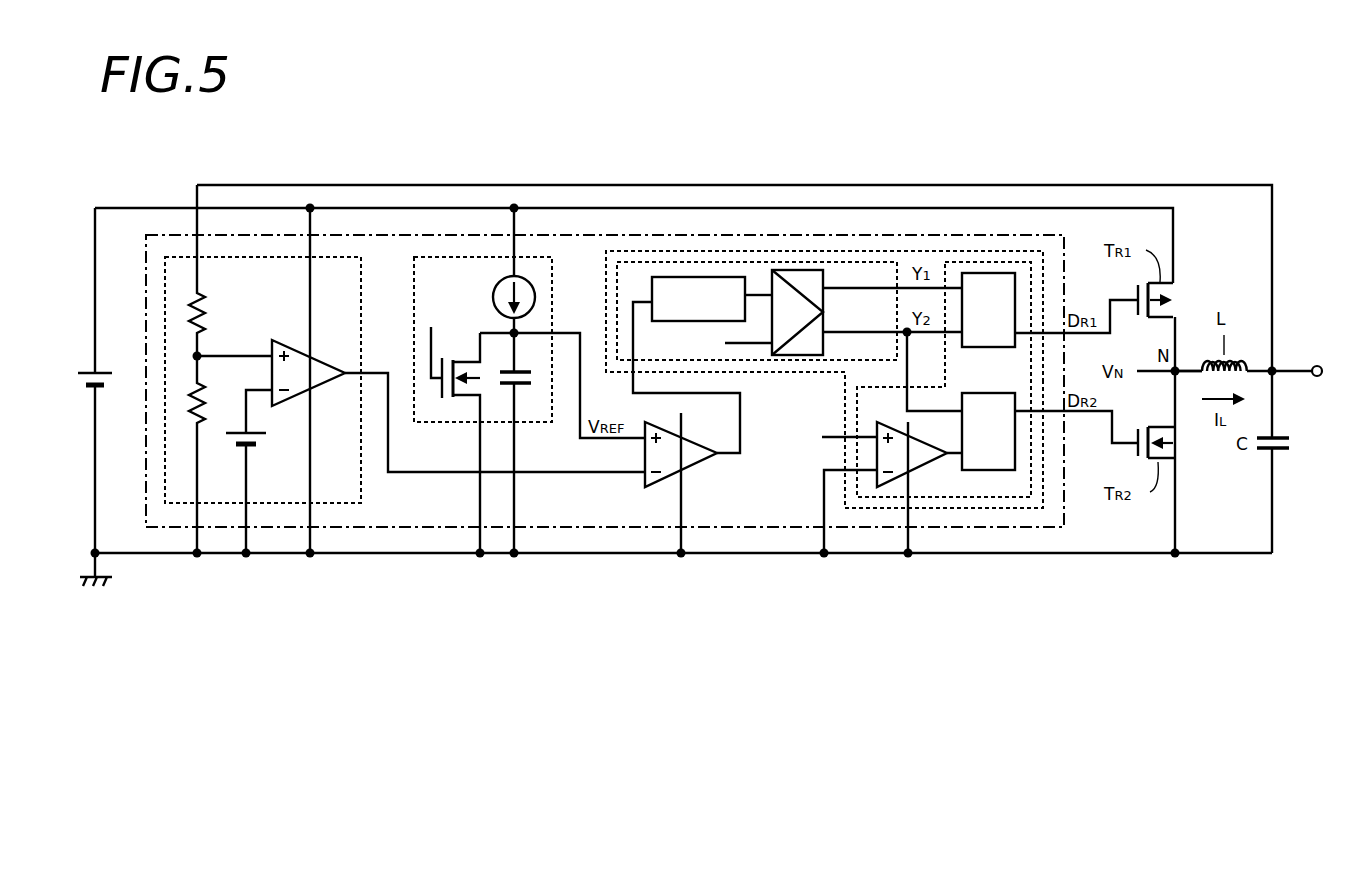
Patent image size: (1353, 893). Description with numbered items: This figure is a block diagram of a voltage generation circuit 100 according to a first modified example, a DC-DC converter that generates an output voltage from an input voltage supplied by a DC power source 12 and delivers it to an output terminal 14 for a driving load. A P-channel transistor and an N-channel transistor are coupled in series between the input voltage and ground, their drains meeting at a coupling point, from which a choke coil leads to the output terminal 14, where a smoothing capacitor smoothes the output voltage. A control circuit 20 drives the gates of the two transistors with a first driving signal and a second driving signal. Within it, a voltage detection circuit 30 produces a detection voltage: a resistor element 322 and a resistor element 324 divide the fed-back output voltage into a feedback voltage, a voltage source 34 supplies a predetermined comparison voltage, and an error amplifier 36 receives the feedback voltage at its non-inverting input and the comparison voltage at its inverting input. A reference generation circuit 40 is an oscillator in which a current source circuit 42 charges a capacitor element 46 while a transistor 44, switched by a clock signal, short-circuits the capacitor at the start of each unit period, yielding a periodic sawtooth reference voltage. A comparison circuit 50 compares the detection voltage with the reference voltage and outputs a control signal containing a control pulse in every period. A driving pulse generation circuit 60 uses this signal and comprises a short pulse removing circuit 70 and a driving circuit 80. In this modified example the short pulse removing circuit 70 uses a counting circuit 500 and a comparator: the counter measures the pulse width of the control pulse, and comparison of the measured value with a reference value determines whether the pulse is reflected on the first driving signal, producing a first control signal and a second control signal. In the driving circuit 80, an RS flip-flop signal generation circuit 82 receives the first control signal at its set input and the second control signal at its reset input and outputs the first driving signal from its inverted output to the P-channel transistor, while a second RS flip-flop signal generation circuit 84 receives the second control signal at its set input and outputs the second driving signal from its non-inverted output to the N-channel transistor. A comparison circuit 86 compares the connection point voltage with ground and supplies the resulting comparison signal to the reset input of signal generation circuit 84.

The voltage generation circuit 100 is at (180, 161).
The DC power source 12 is at (100, 392).
The output terminal 14 is at (1317, 365).
The control circuit 20 is at (766, 532).
The voltage detection circuit 30 is at (344, 257).
The resistor element 322 is at (207, 396).
The resistor element 324 is at (207, 308).
The voltage source 34 is at (250, 448).
The error amplifier 36 is at (327, 383).
The reference generation circuit 40 is at (478, 257).
The current source circuit 42 is at (493, 295).
The transistor 44 is at (463, 398).
The capacitor element 46 is at (528, 388).
The comparison circuit 50 is at (699, 470).
The counting circuit 500 is at (650, 291).
The driving pulse generation circuit 60 is at (1011, 512).
The short pulse removing circuit 70 is at (722, 262).
The driving circuit 80 is at (1013, 262).
The signal generation circuit 82 is at (1015, 283).
The signal generation circuit 84 is at (1015, 457).
The comparison circuit 86 is at (875, 422).